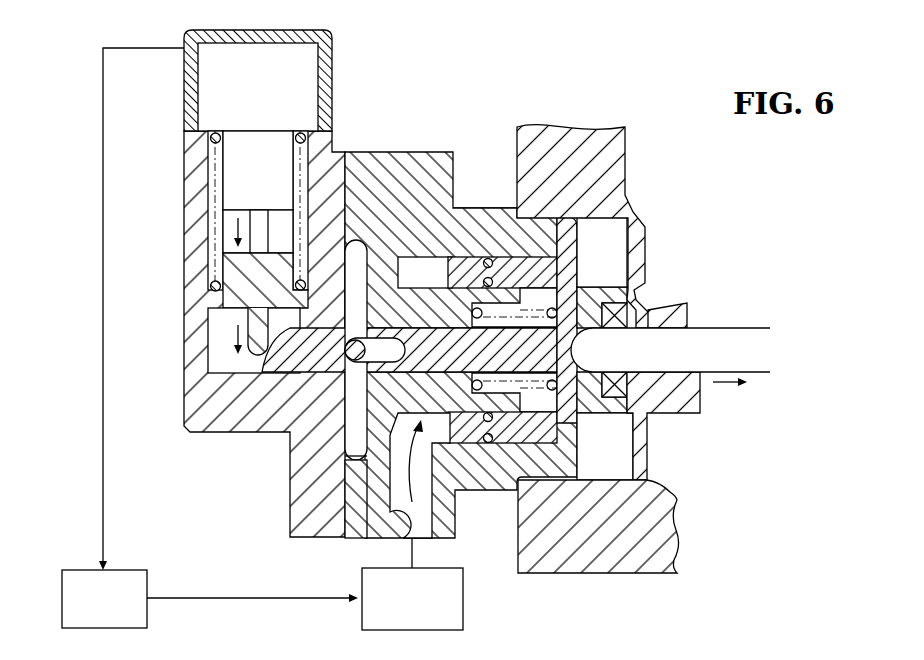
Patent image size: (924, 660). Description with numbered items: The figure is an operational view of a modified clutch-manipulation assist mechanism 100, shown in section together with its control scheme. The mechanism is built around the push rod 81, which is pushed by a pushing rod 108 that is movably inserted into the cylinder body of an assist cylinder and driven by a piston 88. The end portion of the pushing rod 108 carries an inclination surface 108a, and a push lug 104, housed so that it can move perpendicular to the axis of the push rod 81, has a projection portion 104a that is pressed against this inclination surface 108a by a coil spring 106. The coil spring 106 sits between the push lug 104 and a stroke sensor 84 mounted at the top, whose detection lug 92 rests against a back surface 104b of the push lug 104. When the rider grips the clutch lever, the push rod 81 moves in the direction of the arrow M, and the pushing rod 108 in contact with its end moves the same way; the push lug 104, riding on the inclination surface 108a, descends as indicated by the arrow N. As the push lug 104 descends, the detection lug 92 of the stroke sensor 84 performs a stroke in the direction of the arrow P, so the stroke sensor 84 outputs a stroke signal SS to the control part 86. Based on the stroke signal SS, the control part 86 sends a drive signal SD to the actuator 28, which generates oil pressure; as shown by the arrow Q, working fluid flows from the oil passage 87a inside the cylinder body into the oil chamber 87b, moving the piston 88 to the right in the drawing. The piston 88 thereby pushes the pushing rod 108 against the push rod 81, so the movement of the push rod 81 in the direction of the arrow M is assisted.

The clutch-manipulation assist mechanism 100 is at (614, 76).
The stroke sensor 84 is at (215, 92).
The coil spring 106 is at (213, 142).
The detection lug 92 is at (285, 226).
The back surface 104b is at (266, 238).
The push lug 104 is at (235, 300).
The projection portion 104a is at (235, 378).
The inclination surface 108a is at (277, 335).
The oil chamber 87b is at (425, 265).
The piston 88 is at (540, 272).
The oil passage 87a is at (396, 542).
The pushing rod 108 is at (645, 227).
The push rod 81 is at (725, 340).
The control part 86 is at (78, 568).
The actuator 28 is at (463, 598).
The arrow P is at (232, 224).
The arrow N is at (232, 330).
The arrow Q is at (434, 490).
The arrow M is at (730, 397).
The stroke signal SS is at (141, 297).
The drive signal SD is at (252, 586).